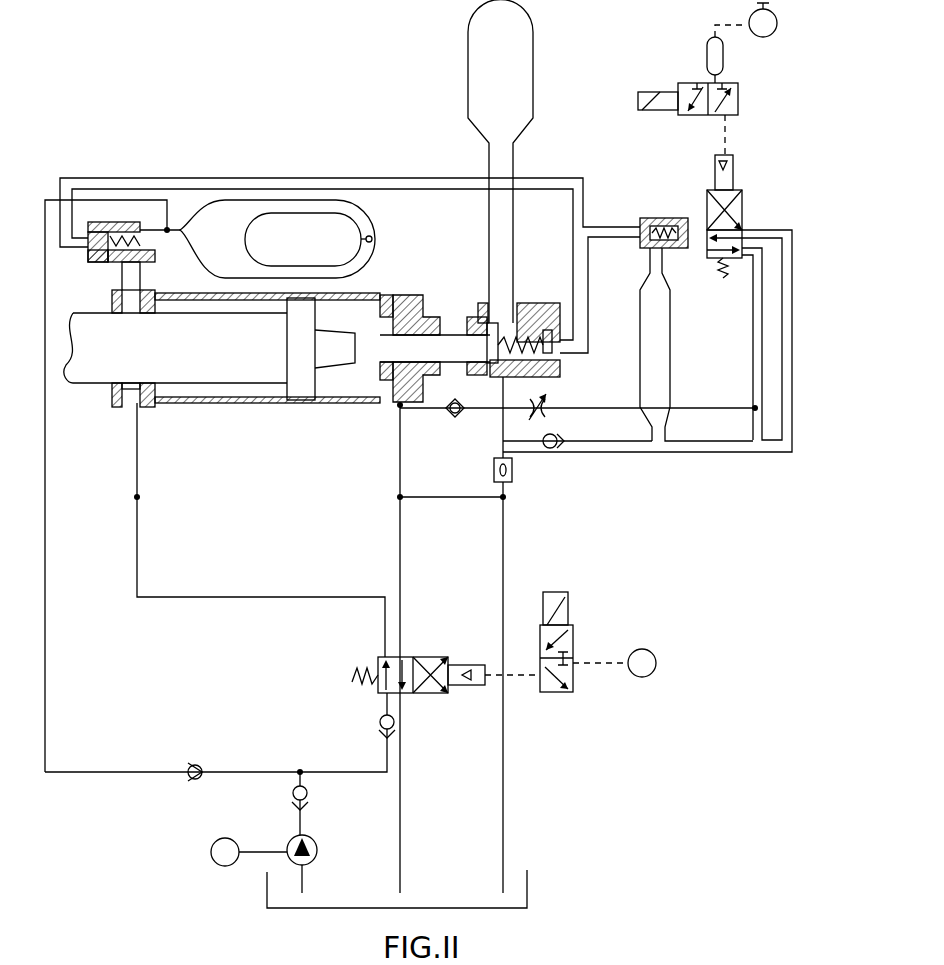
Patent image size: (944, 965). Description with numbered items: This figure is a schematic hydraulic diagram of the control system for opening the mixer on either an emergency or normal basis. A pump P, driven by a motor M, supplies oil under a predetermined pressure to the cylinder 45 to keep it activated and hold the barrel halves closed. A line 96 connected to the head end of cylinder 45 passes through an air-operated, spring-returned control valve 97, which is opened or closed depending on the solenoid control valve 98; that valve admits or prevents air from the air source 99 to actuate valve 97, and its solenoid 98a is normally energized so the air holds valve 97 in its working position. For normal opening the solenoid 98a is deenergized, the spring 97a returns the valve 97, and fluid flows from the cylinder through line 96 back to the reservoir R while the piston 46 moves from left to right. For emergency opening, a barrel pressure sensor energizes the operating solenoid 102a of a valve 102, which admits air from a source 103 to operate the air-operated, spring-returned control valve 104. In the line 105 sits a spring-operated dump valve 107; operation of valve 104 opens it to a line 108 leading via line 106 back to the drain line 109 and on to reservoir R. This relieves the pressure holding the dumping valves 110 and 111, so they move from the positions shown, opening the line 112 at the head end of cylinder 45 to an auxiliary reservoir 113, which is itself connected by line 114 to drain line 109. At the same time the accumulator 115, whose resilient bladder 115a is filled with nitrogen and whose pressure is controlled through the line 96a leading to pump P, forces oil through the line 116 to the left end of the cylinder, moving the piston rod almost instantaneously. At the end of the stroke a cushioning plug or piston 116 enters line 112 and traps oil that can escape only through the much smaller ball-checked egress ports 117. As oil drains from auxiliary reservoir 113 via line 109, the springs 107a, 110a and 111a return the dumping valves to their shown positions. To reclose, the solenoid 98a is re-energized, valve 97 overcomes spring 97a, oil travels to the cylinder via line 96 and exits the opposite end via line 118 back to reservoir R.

The cylinder 45 is at (388, 294).
The piston 46 is at (238, 368).
The line 96 is at (402, 544).
The line 96a is at (46, 549).
The control valve 97 is at (434, 662).
The spring 97a is at (348, 671).
The solenoid control valve 98 is at (574, 645).
The solenoid 98a is at (562, 597).
The air source 99 is at (644, 651).
The valve 102 is at (696, 115).
The operating solenoid 102a is at (648, 110).
The air source 103 is at (776, 19).
The control valve 104 is at (742, 228).
The line 105 is at (612, 230).
The line 106 is at (717, 452).
The dump valve 107 is at (660, 219).
The spring 107a is at (678, 251).
The line 108 is at (767, 292).
The drain line 109 is at (506, 557).
The dumping valve 110 is at (526, 318).
The spring 110a is at (556, 366).
The dumping valve 111 is at (103, 222).
The spring 111a is at (100, 262).
The line 112 is at (431, 334).
The auxiliary reservoir 113 is at (533, 99).
The line 114 is at (497, 428).
The accumulator 115 is at (266, 200).
The resilient bladder 115a is at (324, 212).
The line 116 is at (140, 272).
The ball checked egress ports 117 is at (408, 296).
The line 118 is at (138, 512).
The pump P is at (318, 866).
The motor M is at (220, 866).
The reservoir R is at (453, 906).